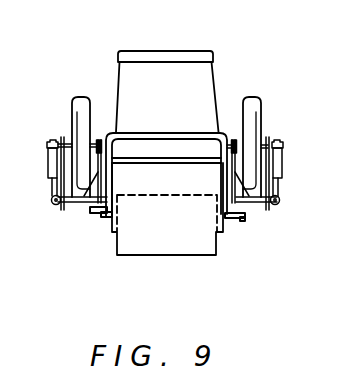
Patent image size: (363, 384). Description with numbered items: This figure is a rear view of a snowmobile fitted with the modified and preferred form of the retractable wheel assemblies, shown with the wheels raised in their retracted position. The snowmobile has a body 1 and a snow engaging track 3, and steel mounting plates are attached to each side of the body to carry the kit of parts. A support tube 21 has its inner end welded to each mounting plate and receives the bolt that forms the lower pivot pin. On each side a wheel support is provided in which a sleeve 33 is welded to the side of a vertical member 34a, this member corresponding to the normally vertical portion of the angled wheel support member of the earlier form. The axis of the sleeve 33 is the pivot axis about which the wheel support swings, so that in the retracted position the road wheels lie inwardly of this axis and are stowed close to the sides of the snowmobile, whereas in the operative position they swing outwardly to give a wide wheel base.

The body 1 is at (162, 77).
The snow engaging track 3 is at (164, 256).
The support tube 21 is at (91, 205).
The sleeve 33 is at (71, 204).
The vertical member 34a is at (52, 166).